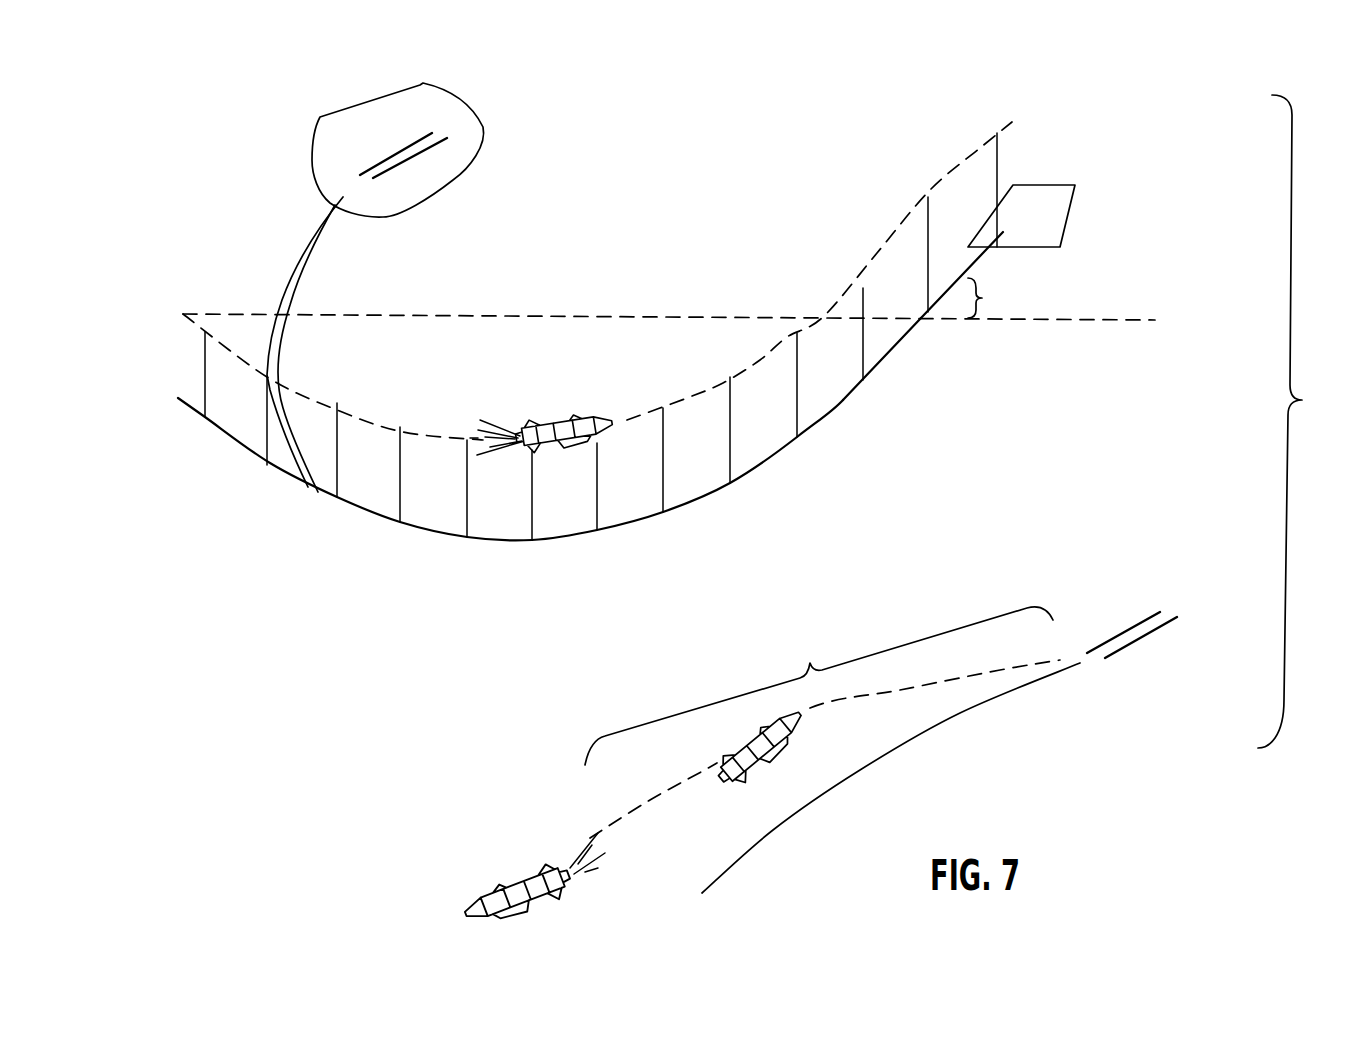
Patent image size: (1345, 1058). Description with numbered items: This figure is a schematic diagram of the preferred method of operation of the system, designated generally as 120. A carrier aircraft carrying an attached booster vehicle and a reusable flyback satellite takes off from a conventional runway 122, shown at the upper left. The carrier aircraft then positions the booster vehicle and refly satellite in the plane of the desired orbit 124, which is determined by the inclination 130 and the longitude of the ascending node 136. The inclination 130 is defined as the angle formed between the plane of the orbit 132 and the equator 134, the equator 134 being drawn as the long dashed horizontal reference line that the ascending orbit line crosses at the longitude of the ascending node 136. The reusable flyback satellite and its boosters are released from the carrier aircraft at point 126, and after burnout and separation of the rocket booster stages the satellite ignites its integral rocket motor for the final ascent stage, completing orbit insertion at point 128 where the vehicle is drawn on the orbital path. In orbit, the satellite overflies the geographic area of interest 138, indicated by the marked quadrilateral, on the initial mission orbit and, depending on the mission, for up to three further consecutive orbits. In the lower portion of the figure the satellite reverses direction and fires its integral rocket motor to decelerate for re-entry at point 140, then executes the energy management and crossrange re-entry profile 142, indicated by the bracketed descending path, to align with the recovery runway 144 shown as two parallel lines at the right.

The method of operation 120 is at (1300, 421).
The conventional runway 122 is at (427, 157).
The plane of the desired orbit 124 is at (232, 452).
The release point 126 is at (310, 460).
The orbit insertion point 128 is at (543, 413).
The inclination 130 is at (982, 298).
The plane of the orbit 132 is at (968, 262).
The equator 134 is at (1072, 319).
The longitude of the ascending node 136 is at (921, 322).
The geographic area of interest 138 is at (1073, 198).
The re-entry deceleration point 140 is at (544, 856).
The energy management and crossrange re-entry profile 142 is at (810, 662).
The recovery runway 144 is at (1142, 638).